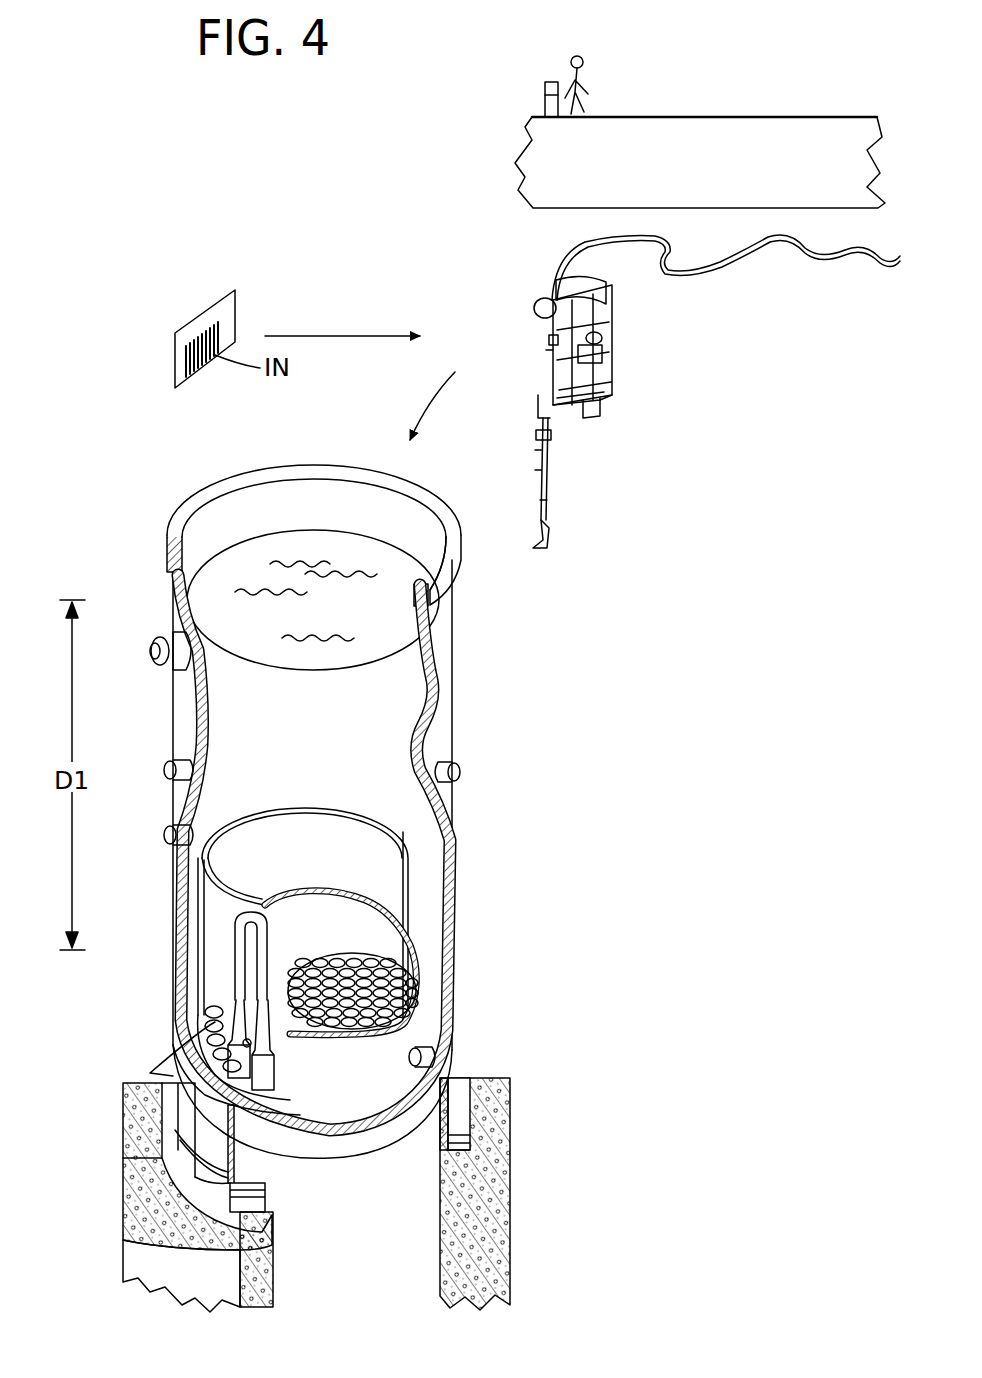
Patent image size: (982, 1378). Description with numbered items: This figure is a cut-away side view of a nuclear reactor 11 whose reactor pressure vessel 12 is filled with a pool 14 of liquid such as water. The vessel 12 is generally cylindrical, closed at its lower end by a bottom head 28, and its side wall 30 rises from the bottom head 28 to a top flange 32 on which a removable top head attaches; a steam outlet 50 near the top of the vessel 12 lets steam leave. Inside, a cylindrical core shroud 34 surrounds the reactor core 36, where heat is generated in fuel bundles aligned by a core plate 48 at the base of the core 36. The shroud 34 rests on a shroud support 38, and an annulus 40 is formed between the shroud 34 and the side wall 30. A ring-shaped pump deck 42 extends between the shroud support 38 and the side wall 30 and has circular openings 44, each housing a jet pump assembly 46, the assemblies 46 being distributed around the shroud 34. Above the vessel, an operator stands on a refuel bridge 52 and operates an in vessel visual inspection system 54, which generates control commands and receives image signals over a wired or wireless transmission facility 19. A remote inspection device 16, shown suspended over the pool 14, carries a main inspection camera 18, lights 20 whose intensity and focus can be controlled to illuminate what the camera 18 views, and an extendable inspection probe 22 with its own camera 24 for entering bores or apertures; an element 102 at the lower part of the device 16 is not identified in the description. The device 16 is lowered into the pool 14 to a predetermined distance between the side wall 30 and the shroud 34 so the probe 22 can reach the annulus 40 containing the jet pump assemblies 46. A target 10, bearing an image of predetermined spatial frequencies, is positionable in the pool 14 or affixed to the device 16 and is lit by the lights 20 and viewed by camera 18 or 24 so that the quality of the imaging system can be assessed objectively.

The target 10 is at (235, 310).
The reactor 11 is at (453, 392).
The reactor pressure vessel 12 is at (190, 500).
The pool 14 is at (318, 552).
The remote inspection device 16 is at (618, 340).
The main inspection camera 18 is at (610, 385).
The transmission facility 19 is at (688, 276).
The illumination devices 20 is at (545, 340).
The inspection probe 22 is at (550, 505).
The camera 24 is at (552, 542).
The bottom head 28 is at (378, 1138).
The side wall 30 is at (440, 726).
The top flange 32 is at (455, 580).
The core shroud 34 is at (300, 815).
The reactor core 36 is at (372, 925).
The shroud support 38 is at (180, 1020).
The annulus 40 is at (195, 930).
The pump deck 42 is at (175, 1040).
The circular openings 44 is at (150, 1073).
The jet pump assembly 46 is at (235, 942).
The core plate 48 is at (398, 990).
The steam outlet 50 is at (150, 650).
The refuel bridge 52 is at (800, 117).
The in vessel visual inspection system 54 is at (545, 105).
The mounting bracket 102 is at (595, 412).